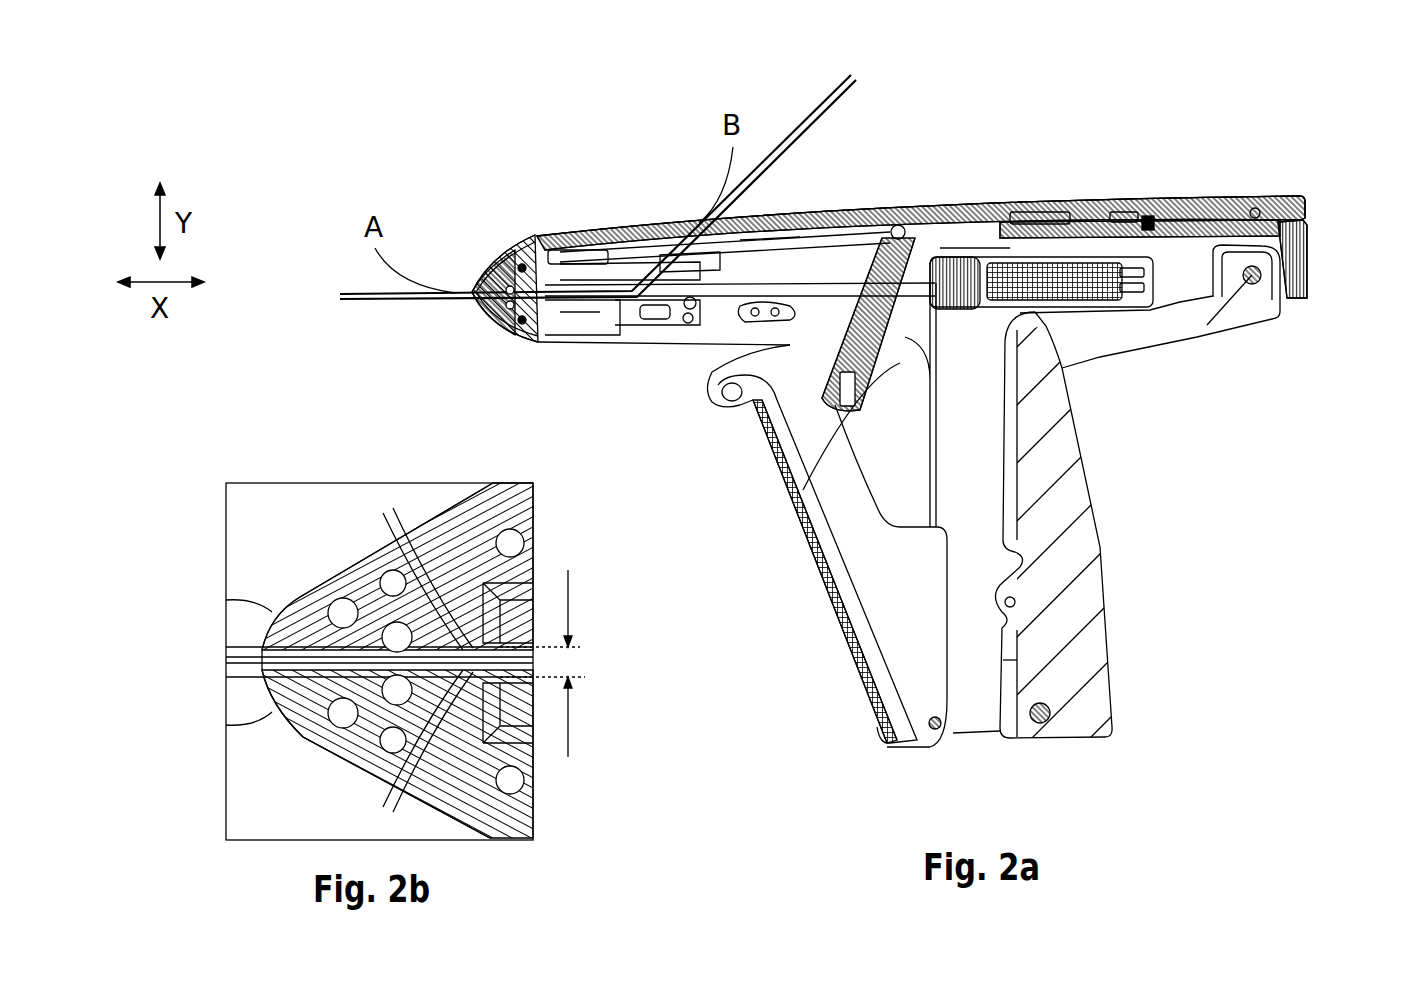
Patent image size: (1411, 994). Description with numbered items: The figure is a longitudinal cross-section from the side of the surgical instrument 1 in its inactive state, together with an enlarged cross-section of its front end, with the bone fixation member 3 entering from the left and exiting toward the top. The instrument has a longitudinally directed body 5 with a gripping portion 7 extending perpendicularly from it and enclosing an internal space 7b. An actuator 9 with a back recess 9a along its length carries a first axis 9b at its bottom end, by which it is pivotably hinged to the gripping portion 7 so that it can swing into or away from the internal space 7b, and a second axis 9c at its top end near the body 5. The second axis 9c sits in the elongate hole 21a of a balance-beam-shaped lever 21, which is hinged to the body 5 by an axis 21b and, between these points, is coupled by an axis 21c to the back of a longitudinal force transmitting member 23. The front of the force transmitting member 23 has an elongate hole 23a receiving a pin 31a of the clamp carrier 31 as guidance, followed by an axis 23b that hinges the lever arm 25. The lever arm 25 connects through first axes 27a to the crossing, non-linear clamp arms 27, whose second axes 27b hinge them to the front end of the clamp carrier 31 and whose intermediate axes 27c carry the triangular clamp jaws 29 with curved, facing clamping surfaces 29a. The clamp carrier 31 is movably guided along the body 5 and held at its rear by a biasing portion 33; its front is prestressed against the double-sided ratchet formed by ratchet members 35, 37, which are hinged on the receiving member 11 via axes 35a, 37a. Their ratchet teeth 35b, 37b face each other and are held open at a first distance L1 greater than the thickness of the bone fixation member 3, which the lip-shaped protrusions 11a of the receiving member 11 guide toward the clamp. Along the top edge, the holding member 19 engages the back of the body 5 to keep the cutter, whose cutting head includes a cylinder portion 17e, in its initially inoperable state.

In FIG. 2A, the surgical instrument 1 is at (334, 200).
In FIG. 2A, the bone fixation member 3 is at (403, 305).
In FIG. 2A, the body 5 is at (1163, 347).
In FIG. 2A, the gripping portion 7 is at (1103, 537).
In FIG. 2A, the internal space 7b is at (983, 660).
In FIG. 2A, the actuator 9 is at (813, 544).
In FIG. 2A, the back recess 9a is at (873, 557).
In FIG. 2A, the first axis 9b is at (923, 720).
In FIG. 2A, the second axis 9c is at (800, 517).
In FIG. 2A, the receiving member 11 is at (493, 275).
In FIG. 2B, the receiving member 11 is at (297, 585).
In FIG. 2B, the lip-shaped protrusions 11a is at (262, 677).
In FIG. 2B, the cylinder portion 17e is at (288, 715).
In FIG. 2A, the holding member 19 is at (1281, 197).
In FIG. 2A, the lever 21 is at (903, 210).
In FIG. 2A, the elongate hole 21a is at (1024, 207).
In FIG. 2A, the axis 21b is at (953, 252).
In FIG. 2A, the axis 21c is at (985, 252).
In FIG. 2A, the force transmitting member 23 is at (563, 340).
In FIG. 2A, the elongate hole 23a is at (657, 330).
In FIG. 2A, the axis 23b is at (633, 348).
In FIG. 2A, the lever arm 25 is at (780, 262).
In FIG. 2A, the clamp arms 27 is at (545, 233).
In FIG. 2A, the first axes 27a is at (690, 262).
In FIG. 2A, the second axes 27b is at (548, 258).
In FIG. 2B, the second axes 27b is at (527, 547).
In FIG. 2A, the intermediate axes 27c is at (584, 258).
In FIG. 2A, the clamp jaws 29 is at (497, 330).
In FIG. 2A, the clamping surfaces 29a is at (528, 350).
In FIG. 2A, the clamp carrier 31 is at (835, 262).
In FIG. 2A, the pin 31a is at (762, 246).
In FIG. 2A, the biasing portion 33 is at (1206, 212).
In FIG. 2B, the ratchet member 35 is at (290, 648).
In FIG. 2B, the axis 35a is at (290, 617).
In FIG. 2B, the ratchet teeth 35b is at (383, 513).
In FIG. 2B, the ratchet member 37 is at (285, 717).
In FIG. 2B, the axis 37a is at (285, 727).
In FIG. 2B, the ratchet teeth 37b is at (383, 807).
In FIG. 2B, the first distance L1 is at (558, 663).